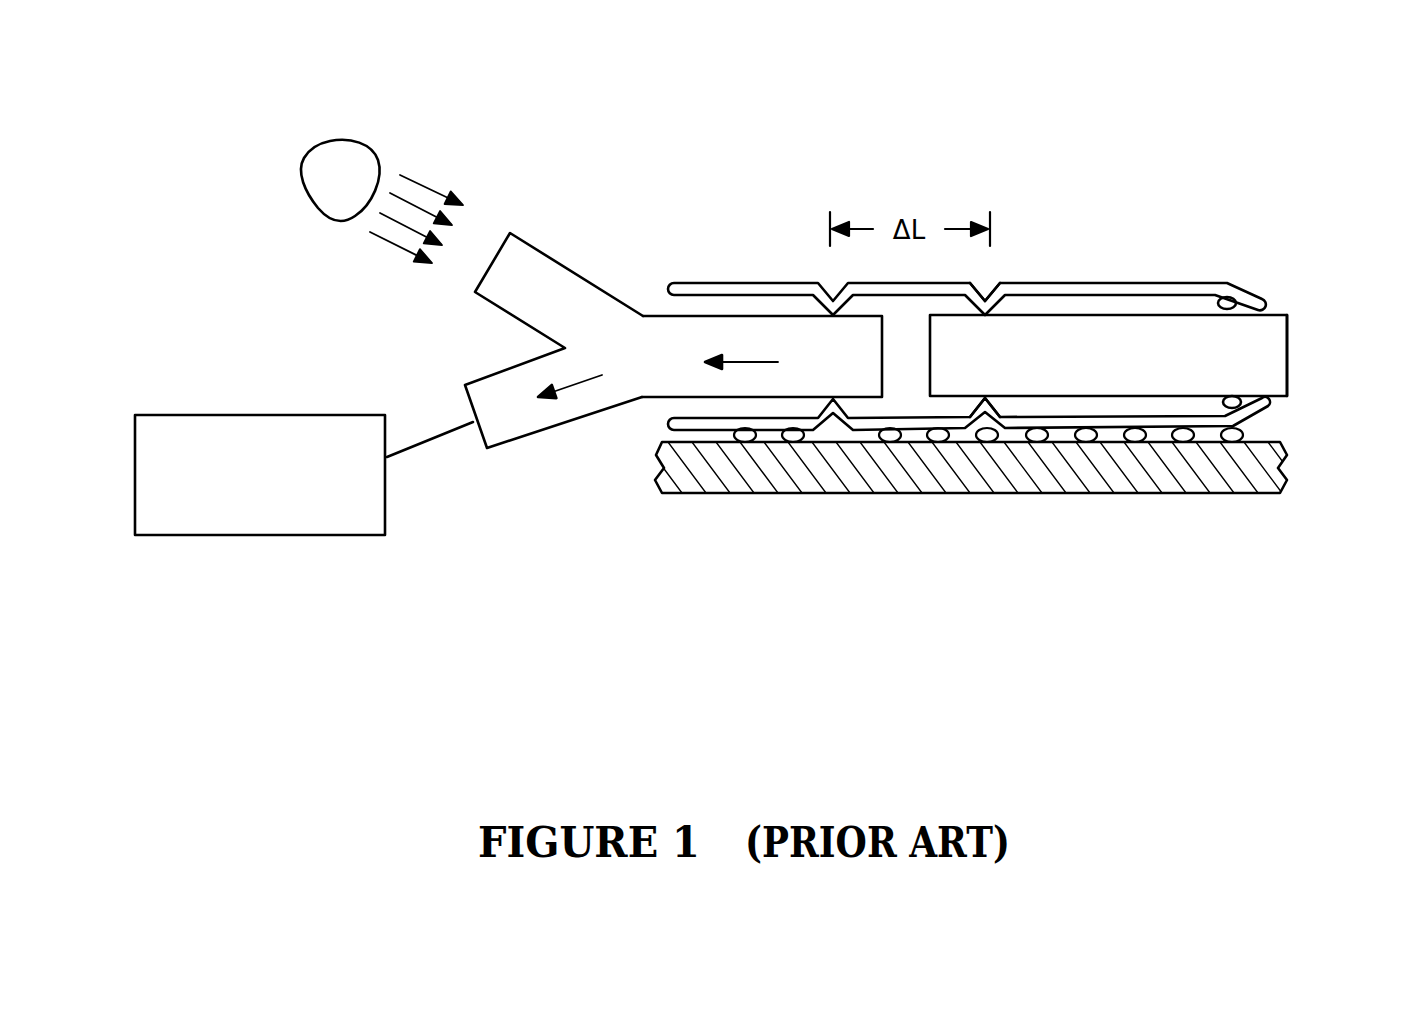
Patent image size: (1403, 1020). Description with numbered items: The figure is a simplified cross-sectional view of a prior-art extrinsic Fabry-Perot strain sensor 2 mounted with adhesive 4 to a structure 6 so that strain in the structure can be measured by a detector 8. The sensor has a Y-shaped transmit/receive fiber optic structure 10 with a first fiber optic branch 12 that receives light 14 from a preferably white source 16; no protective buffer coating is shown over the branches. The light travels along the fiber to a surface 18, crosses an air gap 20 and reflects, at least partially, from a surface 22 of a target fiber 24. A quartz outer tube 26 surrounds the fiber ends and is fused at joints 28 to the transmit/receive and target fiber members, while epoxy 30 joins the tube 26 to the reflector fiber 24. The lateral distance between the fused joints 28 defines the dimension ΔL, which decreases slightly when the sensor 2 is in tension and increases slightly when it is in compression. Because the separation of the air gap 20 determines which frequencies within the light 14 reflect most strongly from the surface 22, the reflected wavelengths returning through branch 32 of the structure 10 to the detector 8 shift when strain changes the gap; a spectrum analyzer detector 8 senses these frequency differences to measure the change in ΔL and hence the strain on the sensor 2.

The extrinsic Fabry-Perot strain sensor 2 is at (1107, 162).
The adhesive 4 is at (722, 435).
The structure 6 is at (652, 467).
The detector 8 is at (187, 415).
The "Y"-shaped transmit/receive fiber optic structure 10 is at (516, 348).
The first fiber optic branch 12 is at (588, 282).
The light 14 is at (425, 182).
The white source 16 is at (332, 140).
The surface 18 is at (878, 380).
The air gap 20 is at (905, 372).
The surface 22 is at (932, 378).
The target fiber 24 is at (1285, 353).
The quartz outer tube 26 is at (685, 281).
The joints 28 is at (987, 397).
The epoxy 30 is at (1217, 297).
The branch 32 is at (527, 437).